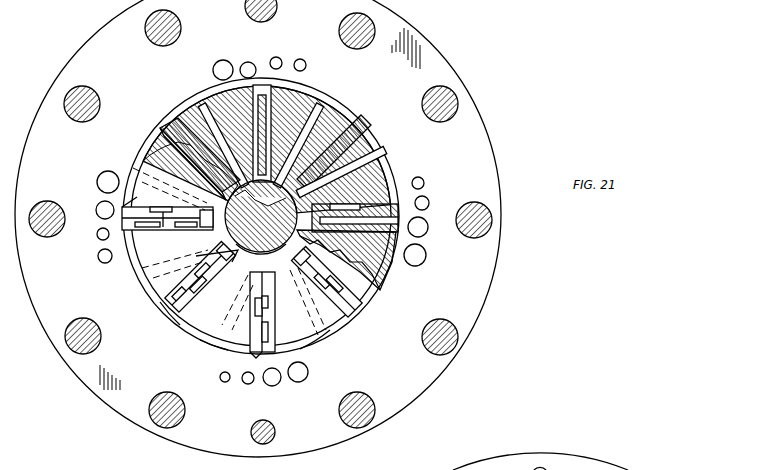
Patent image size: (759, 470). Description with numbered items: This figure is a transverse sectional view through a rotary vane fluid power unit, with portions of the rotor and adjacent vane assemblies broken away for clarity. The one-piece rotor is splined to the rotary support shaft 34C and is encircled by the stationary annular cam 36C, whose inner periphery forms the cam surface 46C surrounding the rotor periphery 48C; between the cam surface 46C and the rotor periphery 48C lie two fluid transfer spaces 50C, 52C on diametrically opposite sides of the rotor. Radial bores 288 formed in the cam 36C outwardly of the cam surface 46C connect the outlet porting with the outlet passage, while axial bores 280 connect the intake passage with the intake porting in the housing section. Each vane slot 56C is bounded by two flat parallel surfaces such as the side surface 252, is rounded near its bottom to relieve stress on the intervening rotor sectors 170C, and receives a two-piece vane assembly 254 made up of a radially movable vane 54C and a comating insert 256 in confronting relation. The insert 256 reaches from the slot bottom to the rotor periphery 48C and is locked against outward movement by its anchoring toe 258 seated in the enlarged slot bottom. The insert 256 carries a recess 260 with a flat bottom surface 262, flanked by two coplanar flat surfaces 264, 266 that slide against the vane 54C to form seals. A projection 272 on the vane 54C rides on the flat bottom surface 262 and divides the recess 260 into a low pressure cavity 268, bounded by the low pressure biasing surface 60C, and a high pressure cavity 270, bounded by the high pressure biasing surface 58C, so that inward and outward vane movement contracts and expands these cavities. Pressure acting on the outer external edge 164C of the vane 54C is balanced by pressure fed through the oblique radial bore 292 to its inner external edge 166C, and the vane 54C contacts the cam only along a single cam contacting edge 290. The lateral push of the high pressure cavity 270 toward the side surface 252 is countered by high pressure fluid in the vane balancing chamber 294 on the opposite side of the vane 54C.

The annular cam 36C is at (440, 367).
The radial bores 288 is at (249, 62).
The axial bores 280 is at (99, 200).
The fluid transfer space 52C is at (378, 143).
The fluid transfer space 50C is at (148, 300).
The cam surface 46C is at (340, 338).
The rotor periphery 48C is at (177, 340).
The outer external edge 164C is at (165, 312).
The rotor sectors 170C is at (325, 107).
The vane 54C is at (270, 100).
The side surface 252 is at (176, 118).
The high pressure vane balancing chamber 294 is at (332, 168).
The flat surface 266 is at (170, 130).
The vane assembly 254 is at (157, 117).
The cam contacting edge 290 is at (365, 118).
The oblique radial bore 292 is at (305, 188).
The flat surface 264 is at (325, 212).
The rotary support shaft 34C is at (275, 209).
The inner external edge 166C is at (282, 269).
The vane slot 56C is at (170, 207).
The high pressure biasing surface 58C is at (168, 224).
The low pressure biasing surface 60C is at (163, 224).
The projection 272 is at (164, 228).
The anchoring toe 258 is at (210, 229).
The flat bottom surface 262 is at (205, 268).
The insert 256 is at (228, 88).
The high pressure cavity 270 is at (268, 307).
The low pressure cavity 268 is at (267, 323).
The recess 260 is at (268, 332).